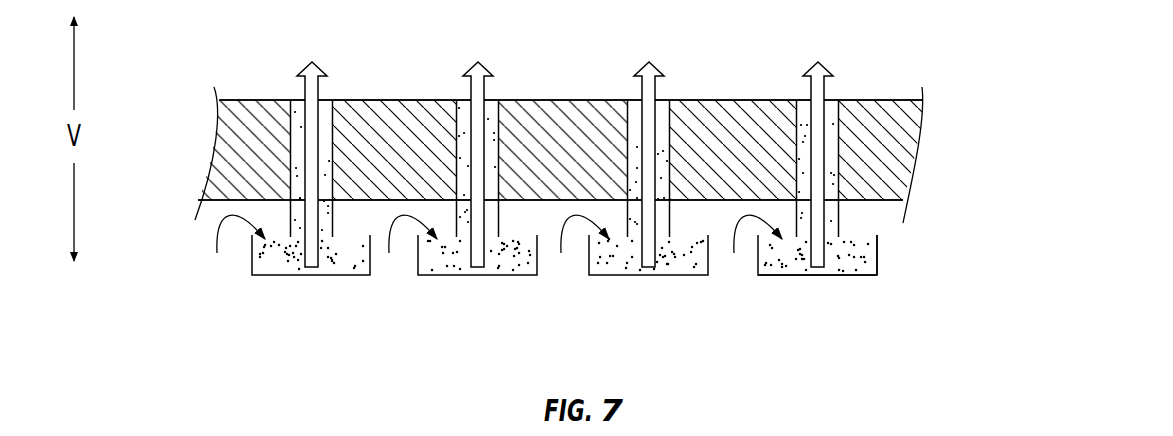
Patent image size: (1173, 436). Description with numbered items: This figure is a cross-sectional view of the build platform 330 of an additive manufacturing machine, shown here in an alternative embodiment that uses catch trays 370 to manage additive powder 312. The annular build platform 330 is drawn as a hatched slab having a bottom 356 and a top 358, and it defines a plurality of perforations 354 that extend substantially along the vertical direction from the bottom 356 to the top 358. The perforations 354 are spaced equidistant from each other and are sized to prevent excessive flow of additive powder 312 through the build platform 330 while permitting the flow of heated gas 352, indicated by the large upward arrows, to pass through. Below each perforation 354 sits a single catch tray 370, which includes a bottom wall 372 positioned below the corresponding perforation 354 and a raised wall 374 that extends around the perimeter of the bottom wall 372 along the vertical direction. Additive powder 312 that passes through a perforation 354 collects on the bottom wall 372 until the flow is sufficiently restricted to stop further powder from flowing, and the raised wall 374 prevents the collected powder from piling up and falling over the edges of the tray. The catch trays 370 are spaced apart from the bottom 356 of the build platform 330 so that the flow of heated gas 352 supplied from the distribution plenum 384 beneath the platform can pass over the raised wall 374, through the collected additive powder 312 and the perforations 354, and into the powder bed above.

The additive powder 312 is at (777, 253).
The annular build platform 330 is at (217, 175).
The flow of heated gas 352 is at (318, 91).
The perforations 354 is at (289, 139).
The bottom of build platform 356 is at (210, 203).
The top of build platform 358 is at (238, 97).
The catch trays 370 is at (665, 279).
The bottom wall 372 is at (817, 276).
The raised wall 374 is at (878, 258).
The distribution plenum 384 is at (453, 340).